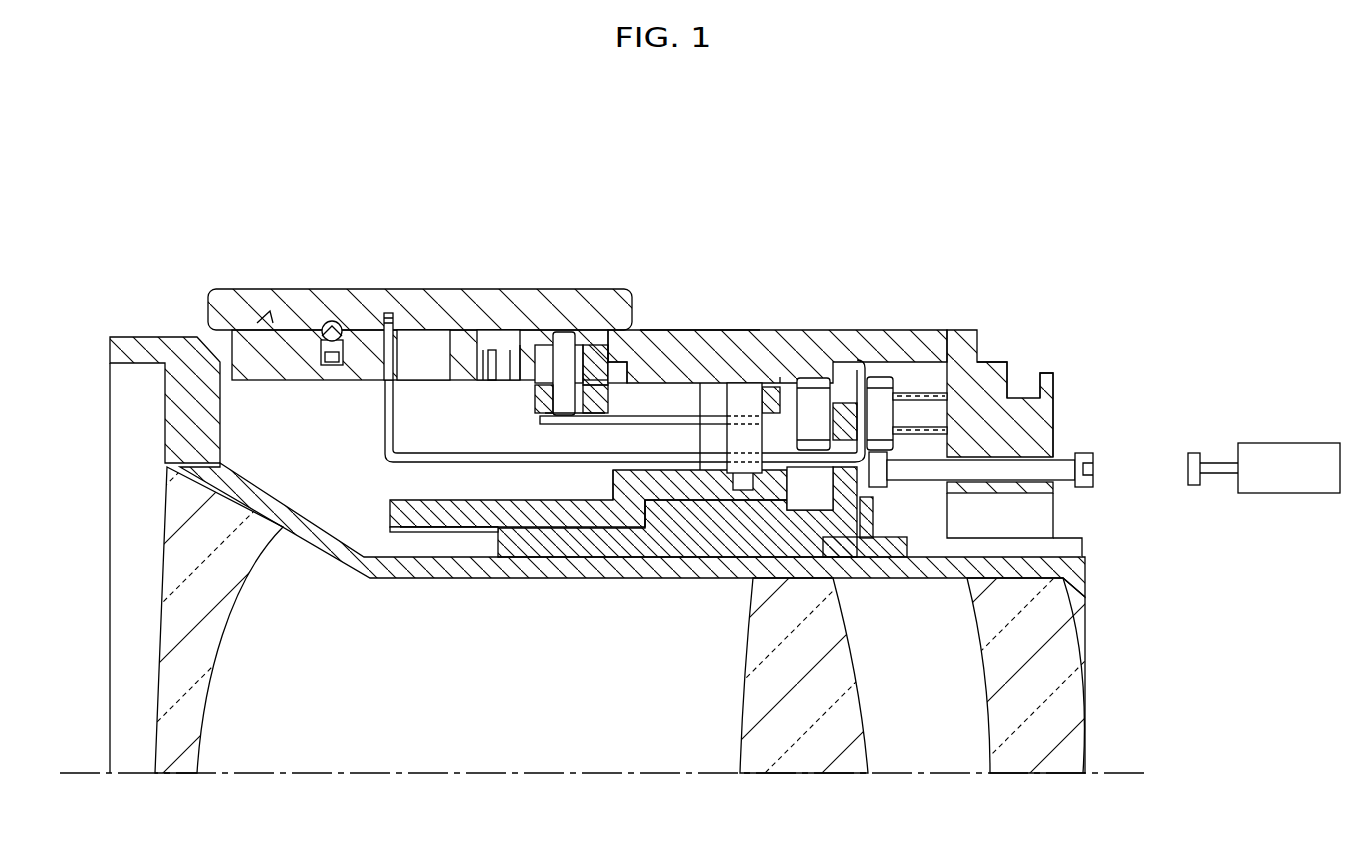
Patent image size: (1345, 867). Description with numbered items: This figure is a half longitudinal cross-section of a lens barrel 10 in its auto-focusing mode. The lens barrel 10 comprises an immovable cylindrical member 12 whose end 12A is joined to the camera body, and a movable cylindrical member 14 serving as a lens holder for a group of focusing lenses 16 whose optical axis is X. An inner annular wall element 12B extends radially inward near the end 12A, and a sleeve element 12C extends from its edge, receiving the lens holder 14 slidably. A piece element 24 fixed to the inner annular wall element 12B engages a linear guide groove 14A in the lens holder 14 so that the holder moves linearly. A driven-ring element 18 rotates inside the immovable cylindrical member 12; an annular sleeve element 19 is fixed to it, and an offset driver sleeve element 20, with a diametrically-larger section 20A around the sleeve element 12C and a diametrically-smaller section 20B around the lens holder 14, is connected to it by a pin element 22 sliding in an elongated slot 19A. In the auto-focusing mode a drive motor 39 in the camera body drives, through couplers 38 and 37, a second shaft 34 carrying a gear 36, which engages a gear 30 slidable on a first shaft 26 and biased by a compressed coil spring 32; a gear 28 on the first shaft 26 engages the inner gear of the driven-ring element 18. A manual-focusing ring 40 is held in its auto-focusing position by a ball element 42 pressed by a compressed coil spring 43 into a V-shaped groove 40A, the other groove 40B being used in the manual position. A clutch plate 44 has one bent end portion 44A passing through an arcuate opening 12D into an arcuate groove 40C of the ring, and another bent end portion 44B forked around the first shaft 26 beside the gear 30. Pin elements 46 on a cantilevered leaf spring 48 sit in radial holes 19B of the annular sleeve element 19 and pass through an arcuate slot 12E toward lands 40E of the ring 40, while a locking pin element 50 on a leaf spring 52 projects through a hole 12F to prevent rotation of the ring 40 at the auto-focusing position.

The lens barrel 10 is at (787, 270).
The immovable cylindrical member 12 is at (757, 327).
The end 12A is at (1027, 415).
The inner annular wall element 12B is at (860, 518).
The sleeve element 12C is at (660, 557).
The arcuate opening 12D is at (462, 345).
The arcuate slot 12E is at (523, 345).
The hole 12F is at (513, 363).
The movable cylindrical member 14 is at (542, 580).
The linear guide groove 14A is at (1085, 550).
The group of focusing lenses 16 is at (155, 778).
The driven-ring element 18 is at (693, 328).
The annular sleeve element 19 is at (600, 380).
The elongated slot 19A is at (607, 400).
The radial hole 19B is at (587, 390).
The offset driver sleeve element 20 is at (393, 493).
The diametrically-larger section 20A is at (613, 480).
The diametrically-smaller section 20B is at (500, 512).
The pin element 22 is at (747, 440).
The piece element 24 is at (882, 578).
The first shaft 26 is at (843, 408).
The gear 28 is at (813, 400).
The gear 30 is at (933, 395).
The compressed coil spring 32 is at (977, 363).
The second shaft 34 is at (1060, 450).
The gear 36 is at (880, 470).
The coupler 37 is at (1093, 480).
The coupler 38 is at (1193, 470).
The drive motor 39 is at (1290, 470).
The manual-focusing ring 40 is at (597, 287).
The V-shaped groove 40A is at (333, 325).
The V-shaped groove 40B is at (282, 325).
The arcuate groove 40C is at (397, 327).
The land 40E is at (510, 337).
The ball element 42 is at (343, 327).
The compressed coil spring 43 is at (330, 370).
The clutch plate 44 is at (383, 420).
The end portion 44A is at (393, 392).
The other end portion 44B is at (867, 385).
The pin element 46 is at (566, 340).
The leaf spring 48 is at (603, 424).
The locking pin element 50 is at (490, 363).
The leaf spring 52 is at (410, 378).